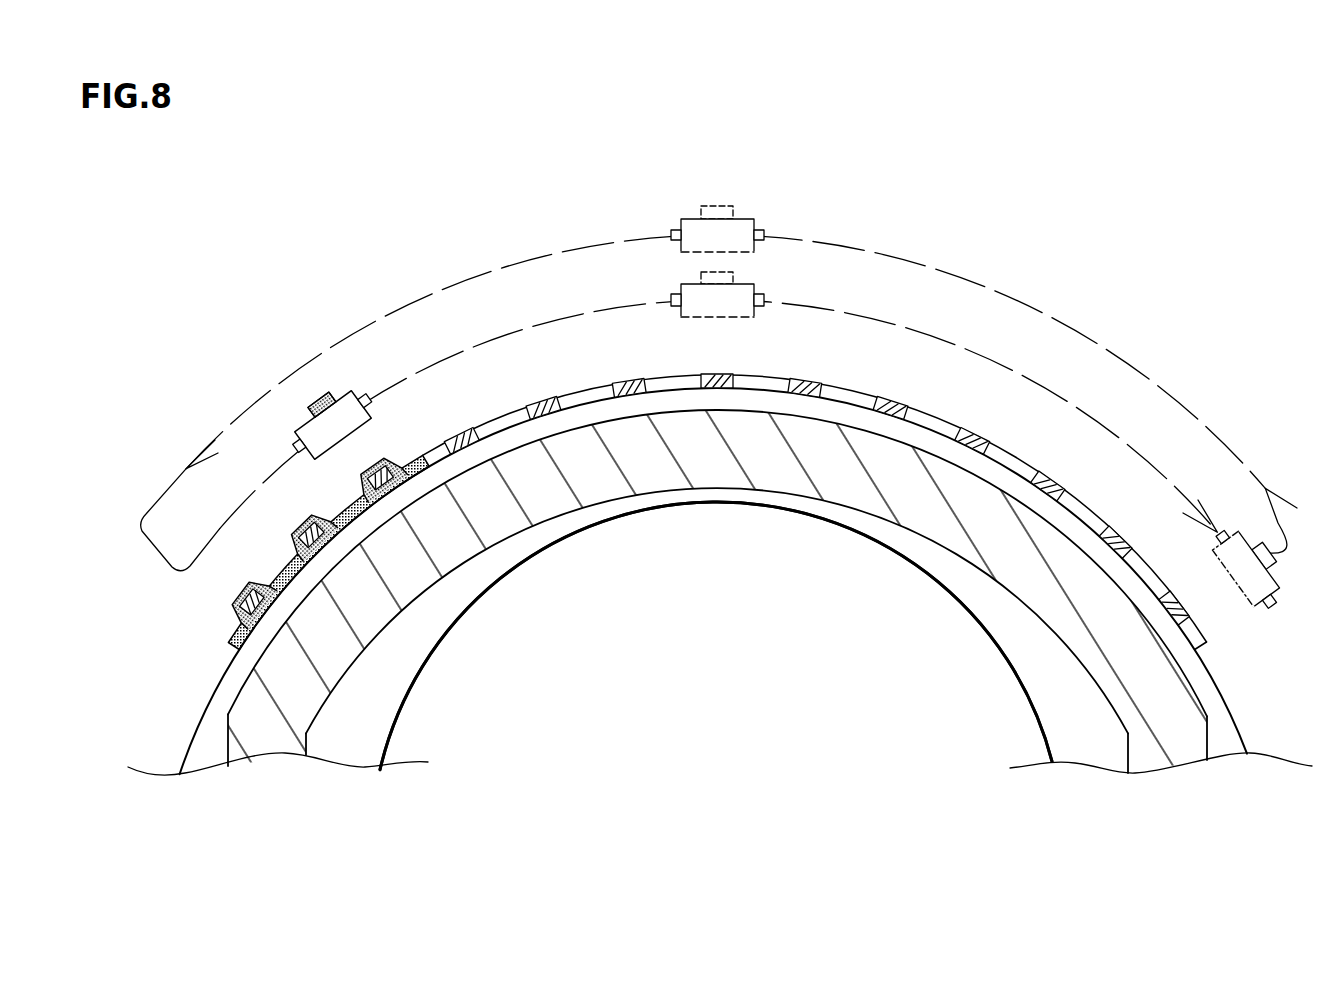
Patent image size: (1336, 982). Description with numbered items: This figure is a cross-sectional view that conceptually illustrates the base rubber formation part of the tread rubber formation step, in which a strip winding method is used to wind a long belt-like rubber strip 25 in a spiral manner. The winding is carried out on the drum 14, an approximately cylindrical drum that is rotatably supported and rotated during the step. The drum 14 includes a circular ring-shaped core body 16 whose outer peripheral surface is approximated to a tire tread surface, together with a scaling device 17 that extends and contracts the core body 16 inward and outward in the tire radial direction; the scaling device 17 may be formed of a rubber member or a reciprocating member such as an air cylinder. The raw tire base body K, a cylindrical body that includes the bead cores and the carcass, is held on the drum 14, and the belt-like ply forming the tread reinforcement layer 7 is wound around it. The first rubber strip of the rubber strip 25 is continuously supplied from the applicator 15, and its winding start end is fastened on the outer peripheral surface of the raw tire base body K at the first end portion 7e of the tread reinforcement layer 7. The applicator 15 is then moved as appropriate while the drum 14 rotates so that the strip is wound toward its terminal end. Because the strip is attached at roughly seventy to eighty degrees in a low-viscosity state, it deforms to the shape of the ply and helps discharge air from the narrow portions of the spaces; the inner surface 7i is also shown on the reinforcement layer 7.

The tread reinforcement layer 7 is at (1060, 487).
The first end portion of the tread reinforcement layer 7e is at (230, 643).
The inner surface of tire 7i is at (1206, 643).
The drum 14 is at (992, 697).
The applicator 15 is at (295, 432).
The core body 16 is at (1012, 565).
The scaling device 17 is at (913, 563).
The rubber strip 25 is at (719, 410).
The raw tire base body K is at (202, 718).